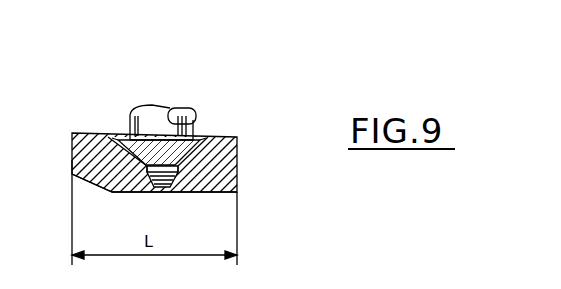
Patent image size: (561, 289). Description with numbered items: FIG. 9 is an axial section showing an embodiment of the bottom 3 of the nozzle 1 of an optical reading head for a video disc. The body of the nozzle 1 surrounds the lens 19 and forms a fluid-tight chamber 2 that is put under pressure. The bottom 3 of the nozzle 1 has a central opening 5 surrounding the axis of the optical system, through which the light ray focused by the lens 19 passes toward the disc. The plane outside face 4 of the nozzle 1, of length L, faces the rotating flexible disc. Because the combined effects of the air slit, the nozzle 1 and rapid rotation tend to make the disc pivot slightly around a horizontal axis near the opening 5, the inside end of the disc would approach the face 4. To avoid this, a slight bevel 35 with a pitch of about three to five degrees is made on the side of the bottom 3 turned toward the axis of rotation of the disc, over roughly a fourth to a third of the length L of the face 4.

The nozzle 1 is at (150, 155).
The fluid-tight chamber 2 is at (120, 137).
The bottom 3 is at (220, 172).
The outside face 4 is at (213, 192).
The central opening 5 is at (163, 190).
The lens 19 is at (196, 126).
The bevel 35 is at (91, 186).